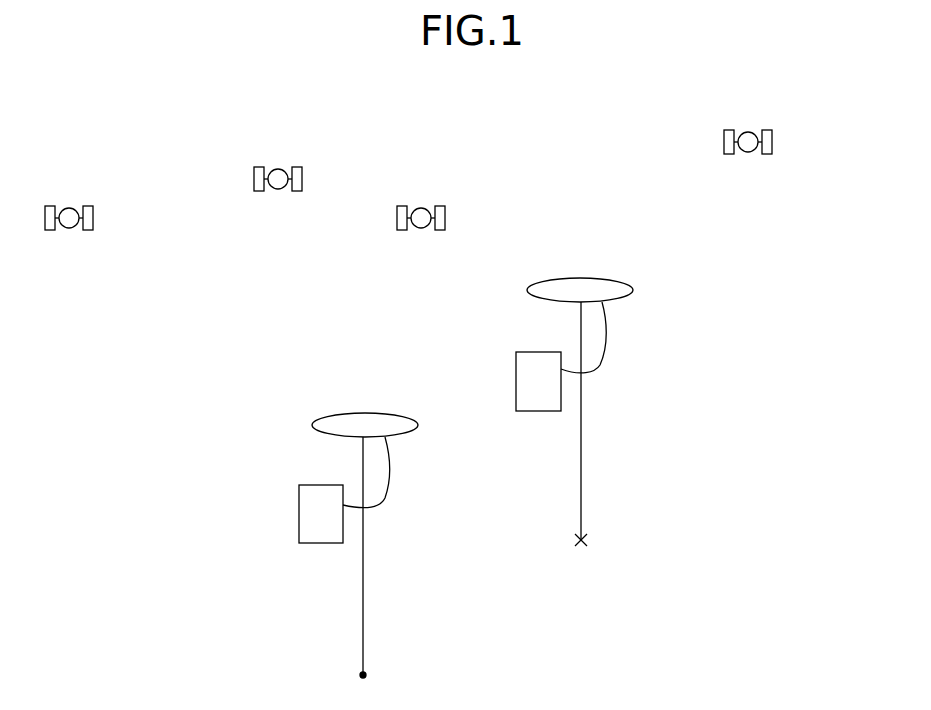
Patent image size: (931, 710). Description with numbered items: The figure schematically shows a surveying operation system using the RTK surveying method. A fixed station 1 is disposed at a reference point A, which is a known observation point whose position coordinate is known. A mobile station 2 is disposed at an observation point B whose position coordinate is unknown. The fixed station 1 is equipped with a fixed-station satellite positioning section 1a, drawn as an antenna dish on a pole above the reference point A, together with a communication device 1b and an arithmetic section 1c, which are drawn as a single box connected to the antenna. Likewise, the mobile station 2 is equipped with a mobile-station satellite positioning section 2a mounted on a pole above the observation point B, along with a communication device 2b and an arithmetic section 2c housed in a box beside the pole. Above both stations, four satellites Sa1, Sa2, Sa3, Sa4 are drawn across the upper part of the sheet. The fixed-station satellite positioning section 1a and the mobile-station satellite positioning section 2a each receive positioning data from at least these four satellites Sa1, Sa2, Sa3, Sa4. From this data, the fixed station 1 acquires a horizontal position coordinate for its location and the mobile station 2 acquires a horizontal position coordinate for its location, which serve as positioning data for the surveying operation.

The fixed station 1 is at (318, 520).
The fixed-station satellite positioning section 1a is at (372, 421).
The communication device 1b is at (295, 550).
The arithmetic section 1c is at (323, 535).
The reference point A is at (360, 676).
The mobile station 2 is at (534, 385).
The mobile-station satellite positioning section 2a is at (588, 287).
The communication device 2b is at (512, 416).
The arithmetic section 2c is at (541, 400).
The observation point B is at (578, 541).
The satellite Sa1 is at (76, 207).
The satellite Sa2 is at (285, 168).
The satellite Sa3 is at (428, 207).
The satellite Sa4 is at (755, 131).